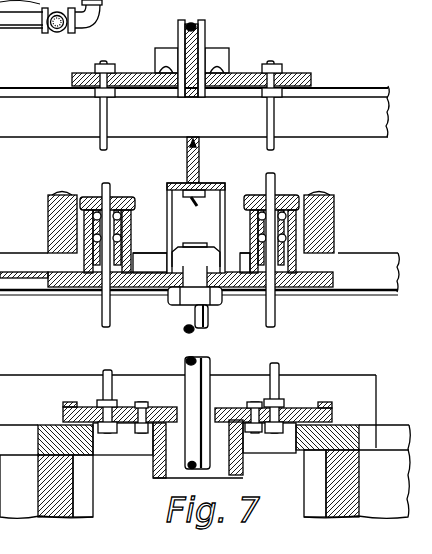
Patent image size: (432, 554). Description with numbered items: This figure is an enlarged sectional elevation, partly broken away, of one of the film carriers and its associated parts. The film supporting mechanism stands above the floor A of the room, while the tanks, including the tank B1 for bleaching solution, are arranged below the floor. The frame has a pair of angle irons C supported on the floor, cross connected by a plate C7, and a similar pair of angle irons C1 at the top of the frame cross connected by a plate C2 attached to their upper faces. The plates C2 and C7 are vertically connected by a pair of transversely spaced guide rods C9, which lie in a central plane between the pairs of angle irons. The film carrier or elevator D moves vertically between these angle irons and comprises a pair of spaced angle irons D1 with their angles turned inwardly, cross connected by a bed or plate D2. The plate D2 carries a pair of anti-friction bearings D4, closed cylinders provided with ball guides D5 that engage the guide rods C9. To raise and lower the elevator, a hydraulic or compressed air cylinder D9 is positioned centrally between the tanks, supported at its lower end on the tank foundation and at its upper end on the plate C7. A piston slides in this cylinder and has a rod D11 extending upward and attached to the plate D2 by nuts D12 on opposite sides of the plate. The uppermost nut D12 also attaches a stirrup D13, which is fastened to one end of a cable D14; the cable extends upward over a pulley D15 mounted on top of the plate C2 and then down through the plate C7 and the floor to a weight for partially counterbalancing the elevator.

The angle irons C1 is at (26, 106).
The plate C2 is at (248, 73).
The guide rods C9 is at (100, 108).
The cable D14 is at (200, 26).
The pulley D15 is at (203, 41).
The angle irons D1 is at (359, 262).
The bed or plate D2 is at (311, 282).
The film carrier or elevator D is at (39, 245).
The anti-friction bearings D4 is at (133, 197).
The ball guides D5 is at (130, 248).
The stirrup D13 is at (196, 228).
The nuts D12 is at (182, 303).
The rod D11 is at (188, 359).
The angle irons C is at (333, 386).
The plate C7 is at (158, 407).
The floor A is at (29, 433).
The tank B1 is at (82, 497).
The hydraulic or compressed air cylinder D9 is at (241, 464).